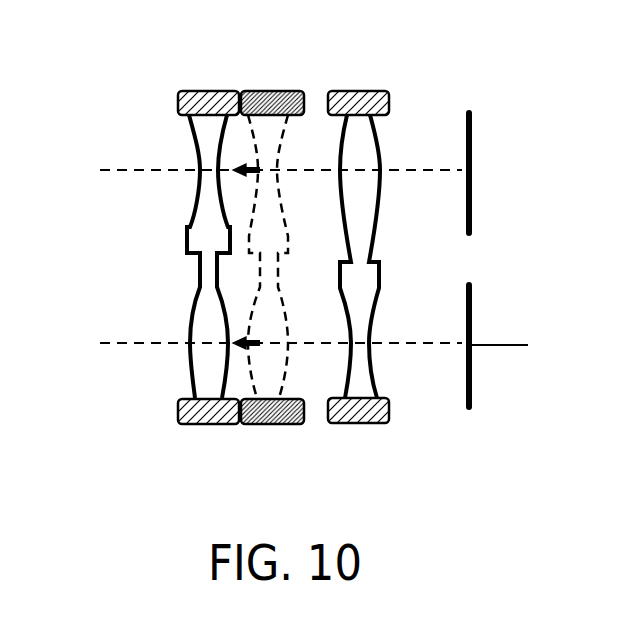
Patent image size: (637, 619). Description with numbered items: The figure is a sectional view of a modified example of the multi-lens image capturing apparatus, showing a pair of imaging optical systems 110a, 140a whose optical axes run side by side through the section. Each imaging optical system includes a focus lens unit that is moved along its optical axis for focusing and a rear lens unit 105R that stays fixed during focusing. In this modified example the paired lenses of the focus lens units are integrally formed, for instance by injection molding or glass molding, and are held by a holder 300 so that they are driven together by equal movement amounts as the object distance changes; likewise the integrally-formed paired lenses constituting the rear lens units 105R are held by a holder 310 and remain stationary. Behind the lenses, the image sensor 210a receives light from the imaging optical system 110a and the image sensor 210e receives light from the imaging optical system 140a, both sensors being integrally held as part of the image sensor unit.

The holder 300 is at (206, 90).
The holder 310 is at (357, 90).
The rear lens unit 105R is at (196, 298).
The imaging optical system 110a is at (156, 152).
The imaging optical system 140a is at (157, 362).
The image sensor 210a is at (472, 146).
The image sensor 210e is at (472, 382).